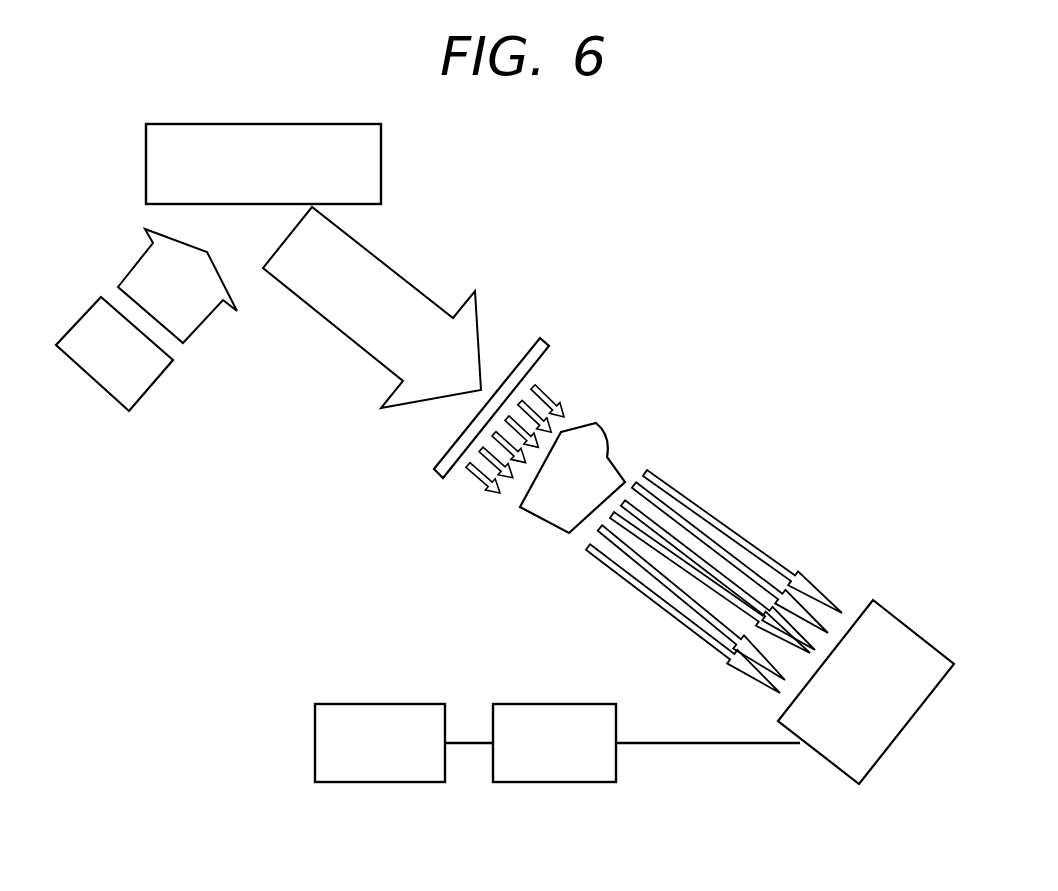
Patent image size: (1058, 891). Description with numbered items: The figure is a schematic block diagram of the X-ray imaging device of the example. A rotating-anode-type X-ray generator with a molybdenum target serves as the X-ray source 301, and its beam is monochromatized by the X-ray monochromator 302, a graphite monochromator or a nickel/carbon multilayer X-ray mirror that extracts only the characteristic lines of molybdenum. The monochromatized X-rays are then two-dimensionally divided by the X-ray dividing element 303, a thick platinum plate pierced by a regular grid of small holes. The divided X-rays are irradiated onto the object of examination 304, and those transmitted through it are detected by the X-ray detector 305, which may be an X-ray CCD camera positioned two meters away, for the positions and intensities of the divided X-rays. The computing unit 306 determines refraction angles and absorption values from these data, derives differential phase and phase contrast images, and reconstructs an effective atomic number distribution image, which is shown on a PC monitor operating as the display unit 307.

The X-ray source 301 is at (112, 393).
The X-ray monochromator 302 is at (383, 167).
The X-ray dividing element 303 is at (542, 338).
The object of examination 304 is at (533, 513).
The X-ray detector 305 is at (907, 623).
The computing unit 306 is at (555, 783).
The display unit 307 is at (380, 783).